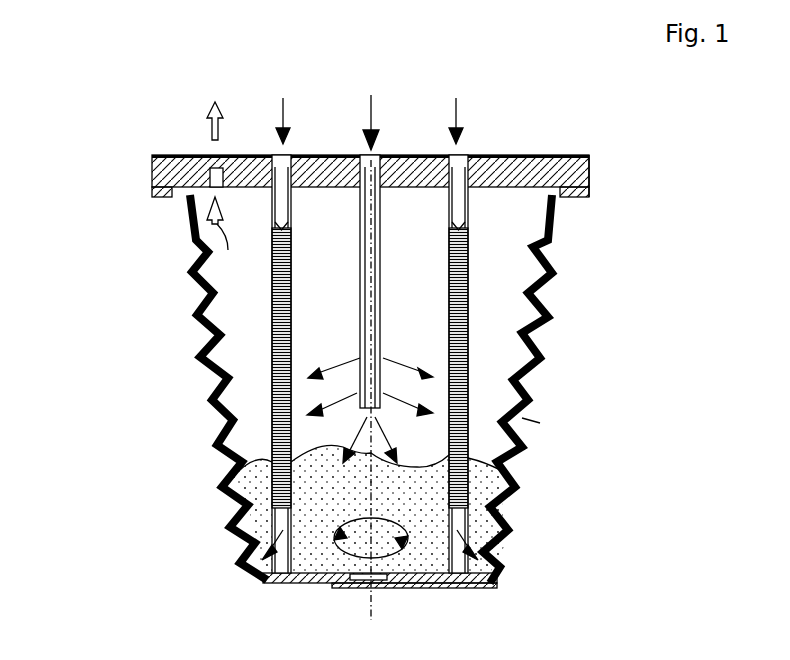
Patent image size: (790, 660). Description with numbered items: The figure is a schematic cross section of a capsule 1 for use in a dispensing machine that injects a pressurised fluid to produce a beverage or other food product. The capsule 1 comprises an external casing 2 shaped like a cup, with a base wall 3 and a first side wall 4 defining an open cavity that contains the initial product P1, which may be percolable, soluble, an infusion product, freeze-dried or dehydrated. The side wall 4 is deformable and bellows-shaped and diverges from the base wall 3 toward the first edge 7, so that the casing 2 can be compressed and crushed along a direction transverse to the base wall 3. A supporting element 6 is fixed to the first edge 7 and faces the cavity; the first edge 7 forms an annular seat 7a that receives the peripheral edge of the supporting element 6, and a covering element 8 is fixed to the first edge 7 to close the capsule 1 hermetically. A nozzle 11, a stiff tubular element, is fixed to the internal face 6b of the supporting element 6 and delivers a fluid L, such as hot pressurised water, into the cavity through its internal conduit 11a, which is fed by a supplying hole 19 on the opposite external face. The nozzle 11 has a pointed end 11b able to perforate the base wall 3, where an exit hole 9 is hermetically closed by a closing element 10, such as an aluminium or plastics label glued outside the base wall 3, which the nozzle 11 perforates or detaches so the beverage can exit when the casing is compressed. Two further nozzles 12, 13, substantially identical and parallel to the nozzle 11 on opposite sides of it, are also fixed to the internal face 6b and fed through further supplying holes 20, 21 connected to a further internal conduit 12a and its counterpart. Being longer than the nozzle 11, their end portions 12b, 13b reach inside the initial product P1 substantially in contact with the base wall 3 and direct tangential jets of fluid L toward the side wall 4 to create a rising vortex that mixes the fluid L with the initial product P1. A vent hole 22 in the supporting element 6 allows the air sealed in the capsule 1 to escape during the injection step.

The capsule 1 is at (120, 82).
The external casing 2 is at (435, 389).
The base wall 3 is at (380, 610).
The first side wall 4 is at (548, 318).
The supporting element 6 is at (555, 157).
The internal face 6b is at (185, 203).
The first edge 7 is at (590, 190).
The annular seat 7a is at (590, 167).
The covering element 8 is at (372, 156).
The exit hole 9 is at (357, 588).
The closing element 10 is at (375, 588).
The nozzle 11 is at (198, 316).
The internal conduit 11a is at (244, 340).
The pointed end 11b is at (470, 447).
The further nozzle 12 is at (272, 392).
The further internal conduit 12a is at (190, 272).
The end portion 12b is at (268, 540).
The further nozzle 13 is at (568, 354).
The end portion 13b is at (423, 588).
The supplying hole 19 is at (378, 155).
The further supplying hole 20 is at (293, 155).
The further supplying hole 21 is at (468, 155).
The vent hole 22 is at (213, 166).
The fluid L is at (540, 423).
The initial product P1 is at (505, 545).